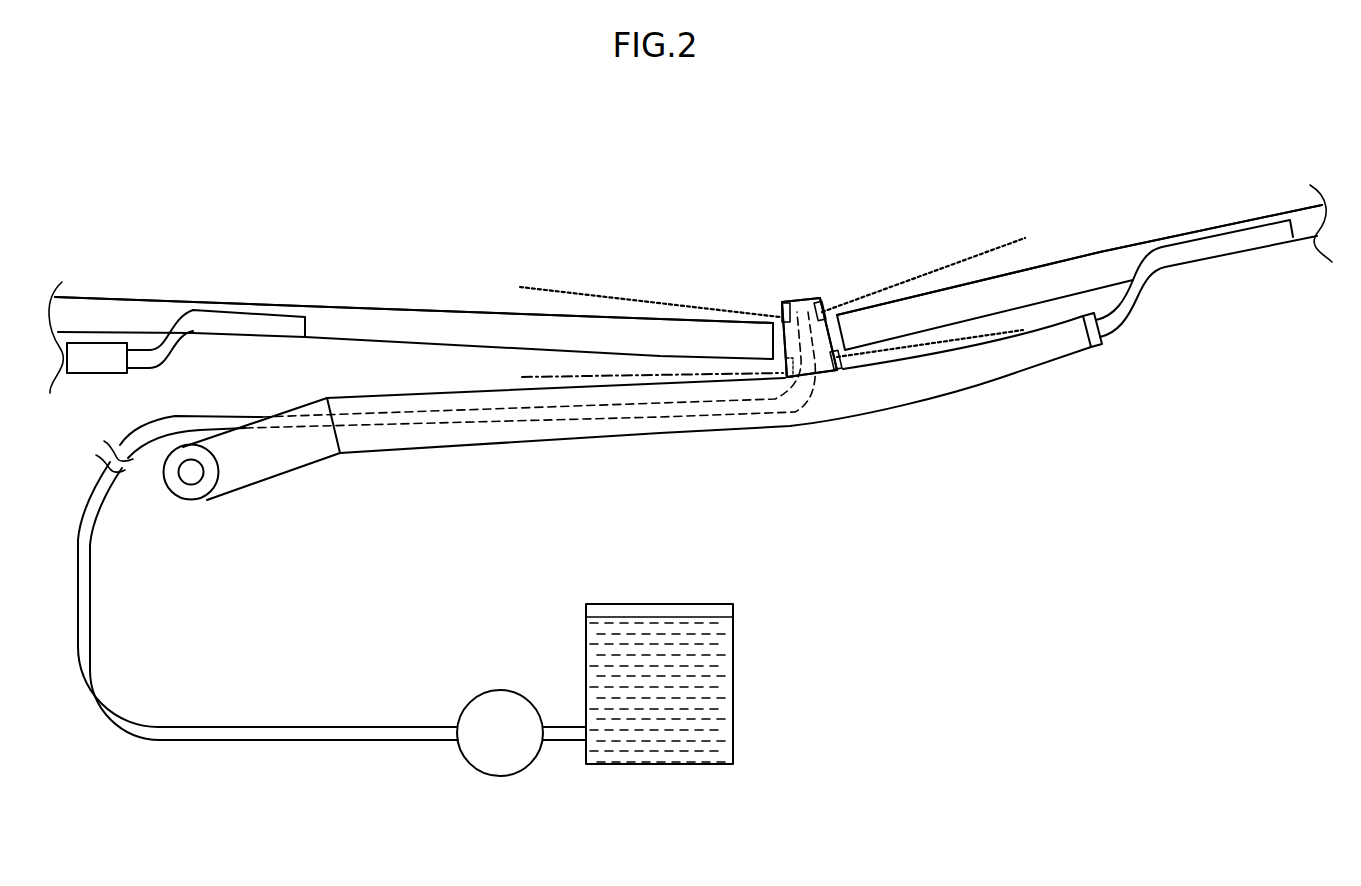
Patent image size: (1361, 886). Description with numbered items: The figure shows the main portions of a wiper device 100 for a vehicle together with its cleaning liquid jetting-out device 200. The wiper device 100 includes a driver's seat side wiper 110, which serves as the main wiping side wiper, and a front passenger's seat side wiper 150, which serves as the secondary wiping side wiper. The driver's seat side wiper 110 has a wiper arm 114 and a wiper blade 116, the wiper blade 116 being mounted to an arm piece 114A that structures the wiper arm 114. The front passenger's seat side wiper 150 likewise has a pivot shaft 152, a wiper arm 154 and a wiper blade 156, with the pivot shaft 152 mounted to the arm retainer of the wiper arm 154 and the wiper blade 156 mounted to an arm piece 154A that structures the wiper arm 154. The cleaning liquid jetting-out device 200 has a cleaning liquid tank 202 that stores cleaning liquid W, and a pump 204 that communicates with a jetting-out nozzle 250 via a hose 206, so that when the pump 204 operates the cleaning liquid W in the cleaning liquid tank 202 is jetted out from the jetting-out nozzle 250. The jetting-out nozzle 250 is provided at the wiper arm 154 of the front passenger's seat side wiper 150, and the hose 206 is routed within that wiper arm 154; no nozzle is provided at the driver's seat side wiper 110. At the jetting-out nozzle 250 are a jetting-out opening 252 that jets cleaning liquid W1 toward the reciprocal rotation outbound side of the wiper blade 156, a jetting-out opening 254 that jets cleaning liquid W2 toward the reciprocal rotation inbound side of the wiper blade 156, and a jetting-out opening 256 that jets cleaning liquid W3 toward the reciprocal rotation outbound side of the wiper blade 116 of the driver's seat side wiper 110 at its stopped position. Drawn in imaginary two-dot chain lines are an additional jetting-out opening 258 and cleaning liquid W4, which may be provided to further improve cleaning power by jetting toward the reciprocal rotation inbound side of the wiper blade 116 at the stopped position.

The wiper device 100 is at (808, 178).
The driver's seat side wiper 110 is at (313, 290).
The wiper arm 114 is at (78, 375).
The arm piece 114A is at (245, 318).
The wiper blade 116 is at (408, 310).
The front passenger's seat side wiper 150 is at (1057, 262).
The pivot shaft 152 is at (191, 473).
The wiper arm 154 is at (813, 410).
The arm piece 154A is at (1200, 247).
The wiper blade 156 is at (1100, 252).
The cleaning liquid jetting-out device 200 is at (770, 724).
The cleaning liquid tank 202 is at (735, 611).
The pump 204 is at (503, 767).
The hose 206 is at (88, 603).
The jetting-out nozzle 250 is at (803, 298).
The jetting-out opening 252 is at (823, 300).
The jetting-out opening 254 is at (838, 370).
The jetting-out opening 256 is at (785, 303).
The jetting-out opening 258 is at (795, 395).
The cleaning liquid W is at (720, 665).
The cleaning liquid W1 is at (952, 252).
The cleaning liquid W2 is at (988, 332).
The cleaning liquid W3 is at (590, 287).
The cleaning liquid W4 is at (596, 378).